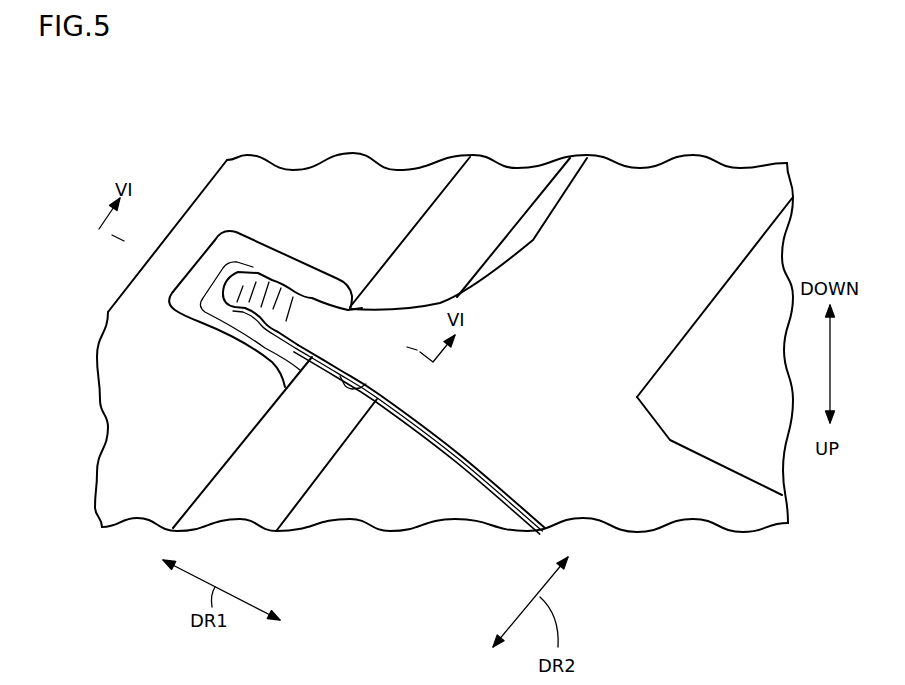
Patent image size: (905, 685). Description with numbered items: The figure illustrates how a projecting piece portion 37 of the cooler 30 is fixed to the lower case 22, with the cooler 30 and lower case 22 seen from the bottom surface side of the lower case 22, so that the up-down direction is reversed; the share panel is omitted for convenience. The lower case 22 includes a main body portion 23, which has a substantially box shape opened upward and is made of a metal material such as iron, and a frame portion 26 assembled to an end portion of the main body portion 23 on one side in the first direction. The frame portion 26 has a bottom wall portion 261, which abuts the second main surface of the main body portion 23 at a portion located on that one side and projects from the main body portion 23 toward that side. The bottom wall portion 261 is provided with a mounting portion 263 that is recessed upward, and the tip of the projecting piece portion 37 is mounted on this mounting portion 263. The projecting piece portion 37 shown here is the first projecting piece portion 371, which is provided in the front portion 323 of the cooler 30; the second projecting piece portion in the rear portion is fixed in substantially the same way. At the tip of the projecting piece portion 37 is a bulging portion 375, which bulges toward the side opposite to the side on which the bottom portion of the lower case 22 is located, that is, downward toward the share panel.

The lower case 22 is at (137, 345).
The frame portion 26 is at (137, 236).
The bottom wall portion 261 is at (222, 195).
The mounting portion 263 is at (210, 310).
The main body portion 23 is at (407, 520).
The cooler 30 is at (571, 327).
The front portion 323 is at (722, 190).
The projecting piece portion 37 is at (384, 296).
The first projecting piece portion 371 is at (305, 318).
The bulging portion 375 is at (270, 281).